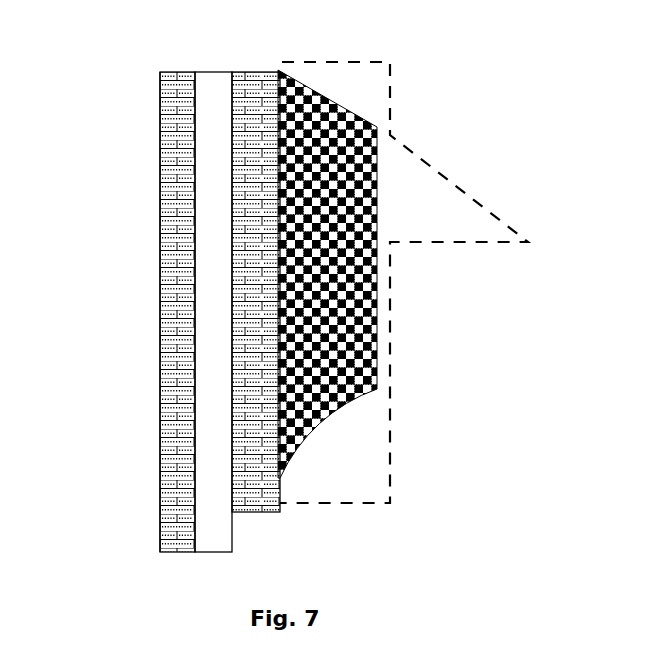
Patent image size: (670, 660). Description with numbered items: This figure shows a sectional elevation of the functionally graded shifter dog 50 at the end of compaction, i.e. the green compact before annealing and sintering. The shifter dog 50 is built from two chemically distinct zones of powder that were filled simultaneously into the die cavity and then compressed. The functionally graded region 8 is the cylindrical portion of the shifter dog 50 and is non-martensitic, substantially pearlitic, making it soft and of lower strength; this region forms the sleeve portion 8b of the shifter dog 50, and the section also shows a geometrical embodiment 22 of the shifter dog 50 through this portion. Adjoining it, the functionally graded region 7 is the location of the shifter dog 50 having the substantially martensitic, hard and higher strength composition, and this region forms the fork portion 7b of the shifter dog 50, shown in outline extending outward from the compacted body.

The shifter dog 50 is at (327, 290).
The cylindrical portion of the shifter dog comprising functionally graded compositio 8 is at (182, 402).
The sleeve portion 8b is at (160, 163).
The geometrical embodiment of shifter dog 22 is at (207, 276).
The location of the shifter dog comprising functionally graded composition 7 is at (357, 393).
The fork portion 7b is at (582, 52).